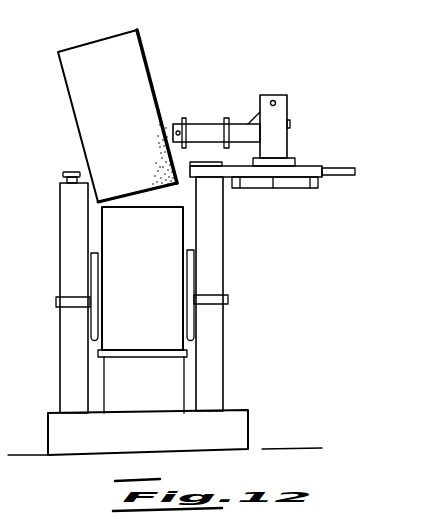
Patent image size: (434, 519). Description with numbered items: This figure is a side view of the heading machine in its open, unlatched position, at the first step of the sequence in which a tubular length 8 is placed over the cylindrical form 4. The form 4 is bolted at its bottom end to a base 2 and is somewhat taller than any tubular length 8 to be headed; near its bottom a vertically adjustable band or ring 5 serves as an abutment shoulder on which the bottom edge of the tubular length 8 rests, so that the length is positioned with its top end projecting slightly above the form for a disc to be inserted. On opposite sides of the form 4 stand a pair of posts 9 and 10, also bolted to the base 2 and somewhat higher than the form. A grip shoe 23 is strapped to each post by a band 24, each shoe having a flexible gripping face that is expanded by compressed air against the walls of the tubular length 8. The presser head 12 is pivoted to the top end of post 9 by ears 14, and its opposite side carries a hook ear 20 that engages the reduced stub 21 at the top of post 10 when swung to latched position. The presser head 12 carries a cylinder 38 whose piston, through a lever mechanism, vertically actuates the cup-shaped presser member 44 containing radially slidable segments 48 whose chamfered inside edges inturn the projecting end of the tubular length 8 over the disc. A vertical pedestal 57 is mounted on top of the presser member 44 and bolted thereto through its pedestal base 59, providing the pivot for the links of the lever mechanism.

The base 2 is at (235, 430).
The cylindrical form 4 is at (143, 310).
The band or ring 5 is at (120, 357).
The tubular length 8 is at (140, 80).
The post 9 is at (223, 253).
The post 10 is at (68, 343).
The presser head 12 is at (263, 126).
The ears 14 is at (205, 177).
The hook ear 20 is at (345, 168).
The reduced stub 21 is at (58, 178).
The grip shoe 23 is at (201, 280).
The band 24 is at (60, 297).
The cylinder 38 is at (206, 123).
The presser member 44 is at (318, 183).
The segments 48 is at (297, 185).
The vertical post or pedestal 57 is at (290, 100).
The pedestal base 59 is at (297, 160).